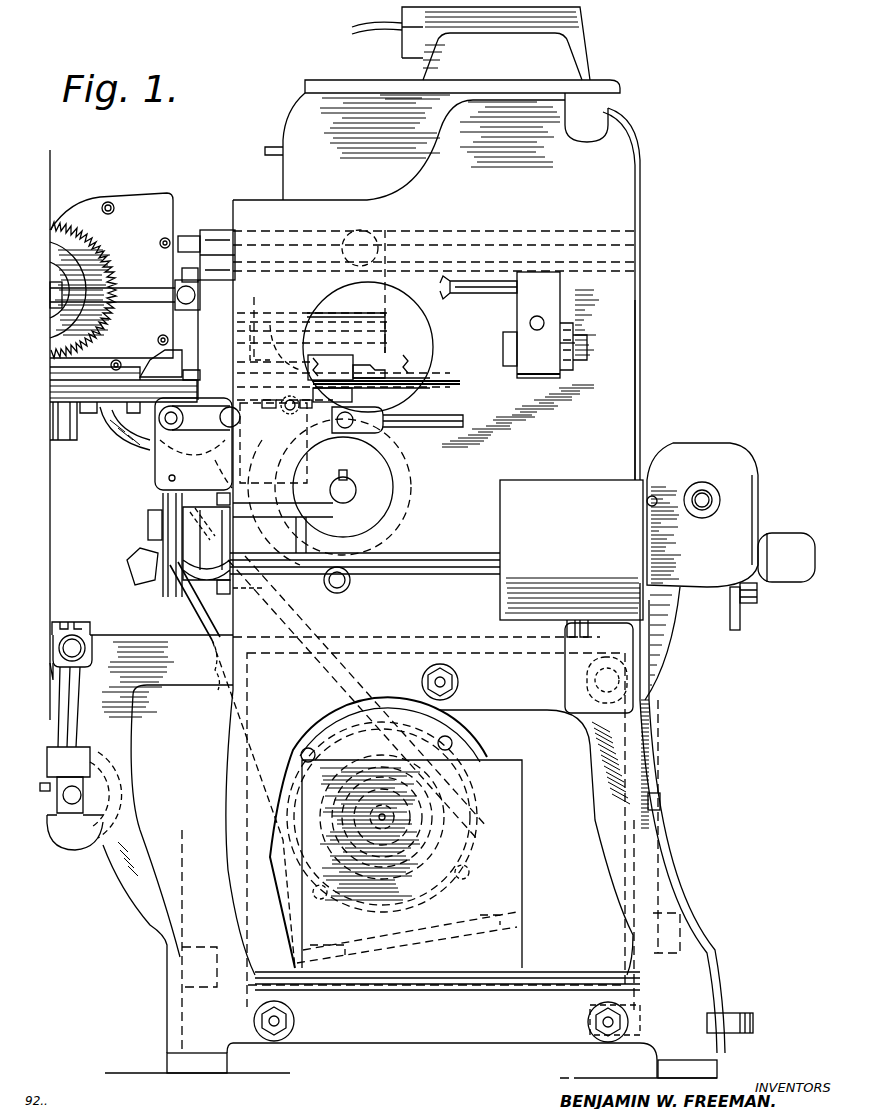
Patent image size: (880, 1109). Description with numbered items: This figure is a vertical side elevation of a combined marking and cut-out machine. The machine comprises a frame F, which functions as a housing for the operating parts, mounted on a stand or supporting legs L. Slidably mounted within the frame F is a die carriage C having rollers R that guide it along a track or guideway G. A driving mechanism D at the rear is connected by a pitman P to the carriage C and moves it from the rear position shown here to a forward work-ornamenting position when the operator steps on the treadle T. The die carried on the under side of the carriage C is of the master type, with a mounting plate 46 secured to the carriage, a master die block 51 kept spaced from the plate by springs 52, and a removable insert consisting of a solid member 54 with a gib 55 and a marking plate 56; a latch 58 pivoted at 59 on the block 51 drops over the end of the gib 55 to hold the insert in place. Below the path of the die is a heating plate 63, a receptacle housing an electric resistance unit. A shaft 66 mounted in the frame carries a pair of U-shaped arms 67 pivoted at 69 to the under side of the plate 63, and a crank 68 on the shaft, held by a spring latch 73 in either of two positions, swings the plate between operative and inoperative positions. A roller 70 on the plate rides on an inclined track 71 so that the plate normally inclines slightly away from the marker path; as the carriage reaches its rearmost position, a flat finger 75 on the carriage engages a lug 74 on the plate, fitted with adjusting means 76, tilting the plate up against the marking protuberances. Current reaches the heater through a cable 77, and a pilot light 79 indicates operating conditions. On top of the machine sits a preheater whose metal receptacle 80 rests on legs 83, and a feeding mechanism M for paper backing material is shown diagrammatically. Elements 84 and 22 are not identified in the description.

The metal receptacle 80 is at (580, 12).
The legs 83 is at (586, 62).
The cable 84 is at (356, 30).
The track or guideway G is at (583, 245).
The rollers R is at (220, 235).
The die carriage C is at (380, 308).
The mounting plate 46 is at (386, 340).
The pivot 59 is at (312, 365).
The latch 58 is at (386, 364).
The gib 55 is at (386, 379).
The solid member 54 is at (432, 382).
The marking plate 56 is at (426, 389).
The heating plate 63 is at (352, 395).
The springs 52 is at (270, 322).
The master die block 51 is at (250, 322).
The roller 70 is at (332, 421).
The inclined track 71 is at (241, 419).
The shaft 66 is at (159, 424).
The U-shaped arms 67 is at (150, 448).
The crank 68 is at (200, 436).
The pivots 69 is at (212, 460).
The spring latch 73 is at (168, 479).
The driving mechanism D is at (112, 204).
The pitman P is at (118, 285).
The downwardly projecting plate or flat finger 75 is at (180, 345).
The adjusting means 76 is at (183, 375).
The lug or finger 74 is at (190, 388).
The stand or supporting legs L is at (633, 842).
The treadle T is at (673, 1000).
The feeding mechanism M is at (647, 488).
The pilot light 79 is at (573, 292).
The cable 77 is at (486, 293).
The shaft 22 is at (545, 347).
The frame F is at (618, 379).